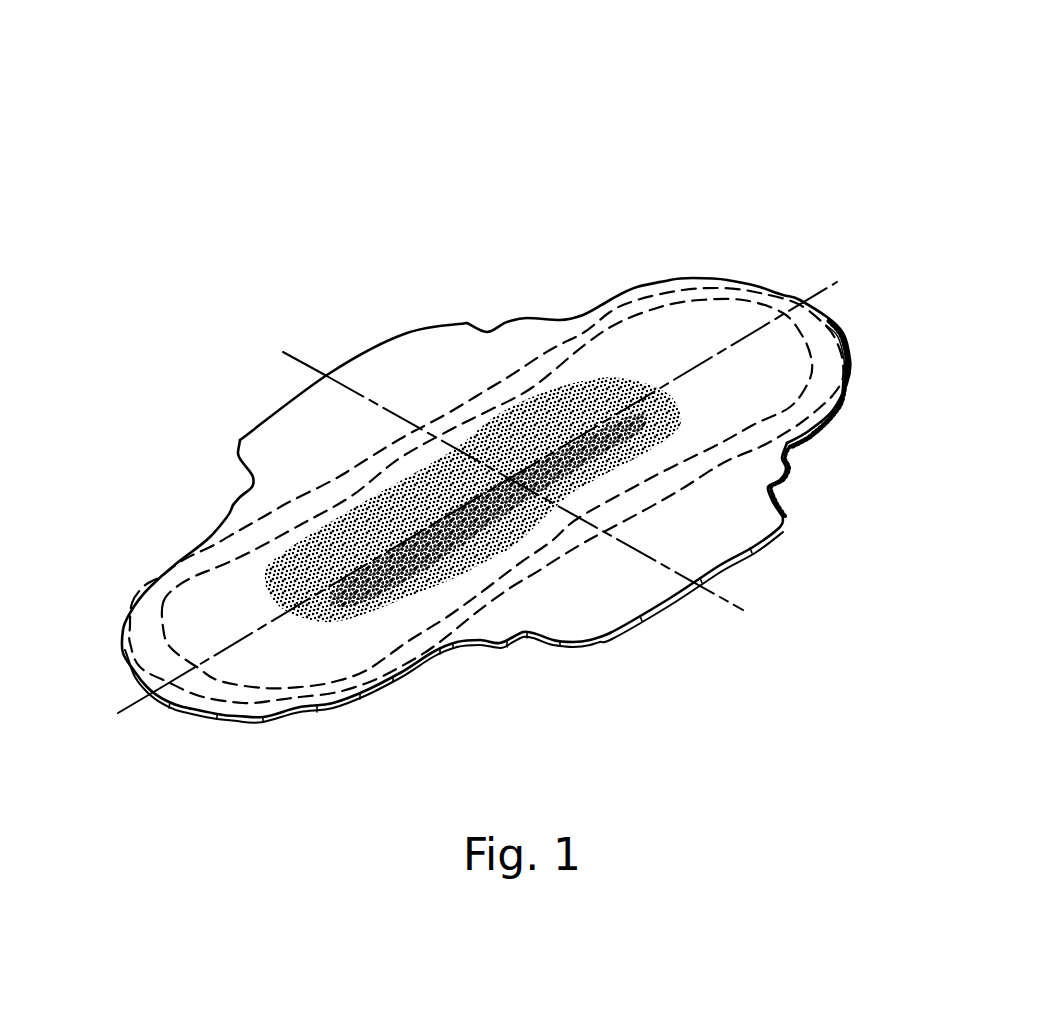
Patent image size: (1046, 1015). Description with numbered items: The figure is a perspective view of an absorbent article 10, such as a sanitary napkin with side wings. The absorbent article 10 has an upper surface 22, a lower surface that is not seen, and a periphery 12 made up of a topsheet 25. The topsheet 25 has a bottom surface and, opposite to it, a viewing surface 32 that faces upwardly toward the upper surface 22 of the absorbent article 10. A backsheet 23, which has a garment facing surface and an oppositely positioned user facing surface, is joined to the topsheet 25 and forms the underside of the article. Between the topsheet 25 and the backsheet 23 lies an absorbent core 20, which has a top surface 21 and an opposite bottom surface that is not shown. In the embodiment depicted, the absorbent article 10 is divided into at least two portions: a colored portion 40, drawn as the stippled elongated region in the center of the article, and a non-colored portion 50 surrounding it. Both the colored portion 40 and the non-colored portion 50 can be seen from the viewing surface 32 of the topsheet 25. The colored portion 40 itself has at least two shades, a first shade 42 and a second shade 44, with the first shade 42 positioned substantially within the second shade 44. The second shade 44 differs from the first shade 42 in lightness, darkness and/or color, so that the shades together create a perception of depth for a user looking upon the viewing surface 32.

The absorbent article 10 is at (723, 138).
The periphery 12 is at (608, 295).
The absorbent core 20 is at (683, 303).
The top surface 21 is at (826, 328).
The upper surface 22 is at (280, 660).
The backsheet 23 is at (355, 683).
The topsheet 25 is at (220, 588).
The viewing surface 32 is at (310, 523).
The colored portion 40 is at (492, 426).
The first shade 42 is at (412, 528).
The second shade 44 is at (237, 505).
The non-colored portion 50 is at (200, 628).